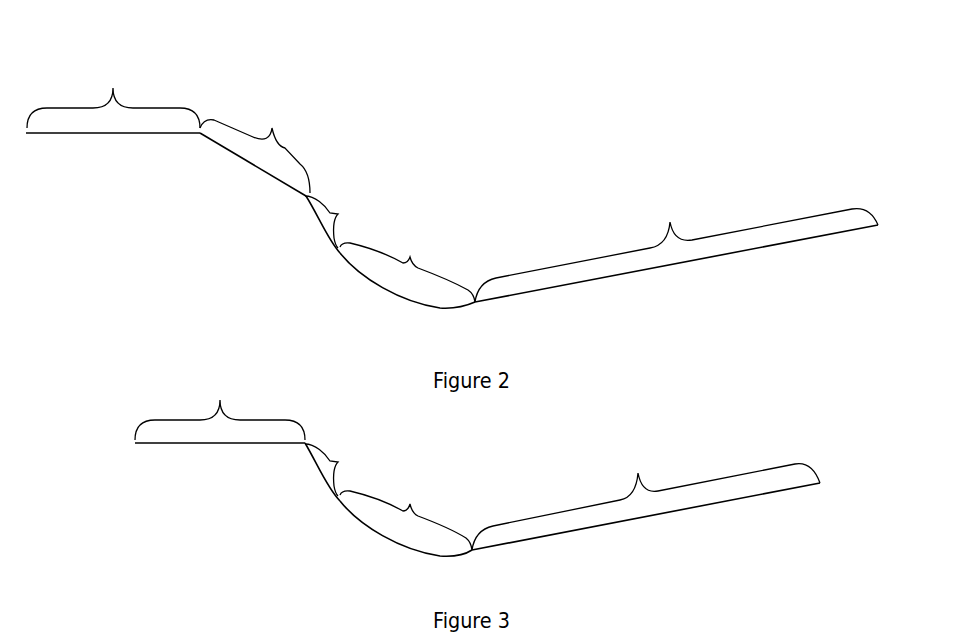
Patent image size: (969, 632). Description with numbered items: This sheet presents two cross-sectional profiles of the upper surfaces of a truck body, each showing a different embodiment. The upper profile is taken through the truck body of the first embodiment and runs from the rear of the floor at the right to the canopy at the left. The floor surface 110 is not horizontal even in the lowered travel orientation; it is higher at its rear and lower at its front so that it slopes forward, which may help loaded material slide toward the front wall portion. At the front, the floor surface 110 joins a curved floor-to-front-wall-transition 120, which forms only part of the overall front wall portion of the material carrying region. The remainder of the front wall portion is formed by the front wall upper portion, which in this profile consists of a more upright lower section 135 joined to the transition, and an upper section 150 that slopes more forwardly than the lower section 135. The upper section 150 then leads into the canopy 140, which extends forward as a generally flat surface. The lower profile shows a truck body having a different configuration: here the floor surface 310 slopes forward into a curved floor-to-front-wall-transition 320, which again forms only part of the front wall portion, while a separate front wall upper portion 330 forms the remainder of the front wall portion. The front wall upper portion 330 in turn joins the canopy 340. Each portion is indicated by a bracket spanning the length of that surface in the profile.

In FIG. 2, the floor surface 110 is at (670, 222).
In FIG. 2, the floor-to-front-wall-transition 120 is at (410, 257).
In FIG. 2, the lower section of front wall upper portion 135 is at (338, 214).
In FIG. 2, the upper section of front wall upper portion 150 is at (272, 128).
In FIG. 2, the canopy 140 is at (113, 88).
In FIG. 3, the floor surface 310 is at (638, 473).
In FIG. 3, the floor-to-front-wall-transition 320 is at (410, 504).
In FIG. 3, the front wall upper portion 330 is at (334, 462).
In FIG. 3, the canopy 340 is at (220, 400).